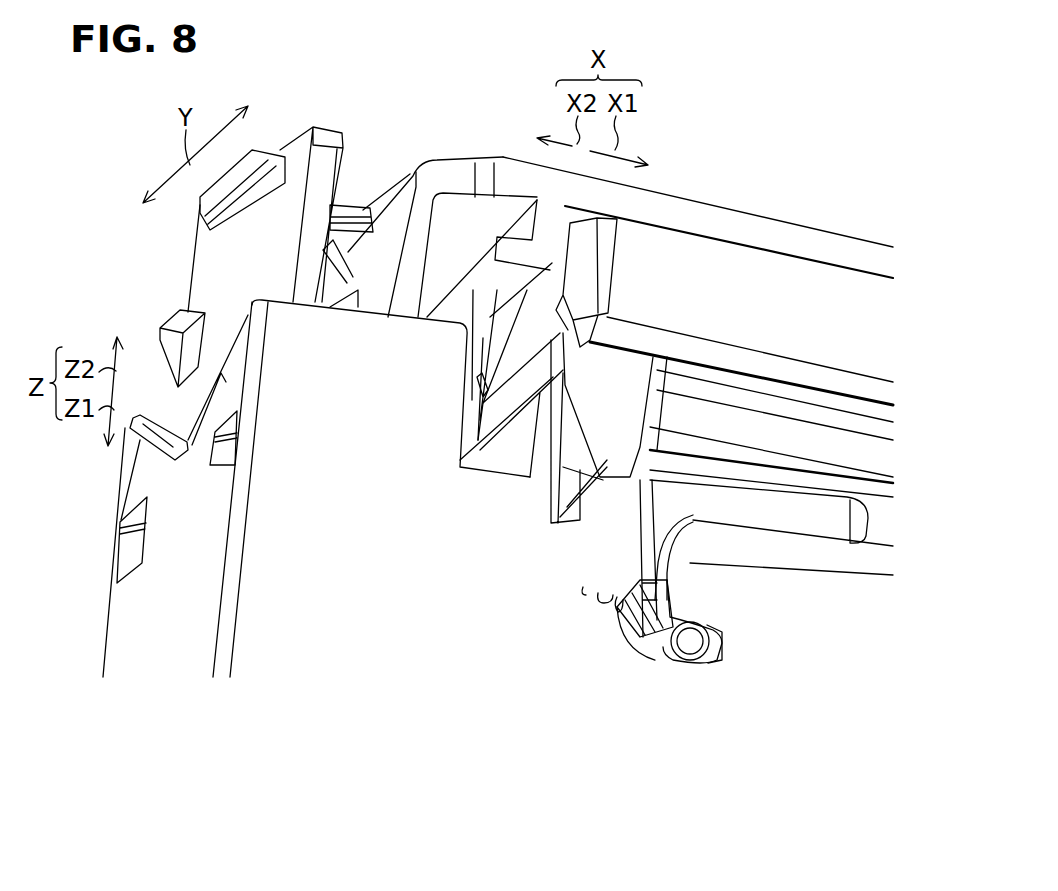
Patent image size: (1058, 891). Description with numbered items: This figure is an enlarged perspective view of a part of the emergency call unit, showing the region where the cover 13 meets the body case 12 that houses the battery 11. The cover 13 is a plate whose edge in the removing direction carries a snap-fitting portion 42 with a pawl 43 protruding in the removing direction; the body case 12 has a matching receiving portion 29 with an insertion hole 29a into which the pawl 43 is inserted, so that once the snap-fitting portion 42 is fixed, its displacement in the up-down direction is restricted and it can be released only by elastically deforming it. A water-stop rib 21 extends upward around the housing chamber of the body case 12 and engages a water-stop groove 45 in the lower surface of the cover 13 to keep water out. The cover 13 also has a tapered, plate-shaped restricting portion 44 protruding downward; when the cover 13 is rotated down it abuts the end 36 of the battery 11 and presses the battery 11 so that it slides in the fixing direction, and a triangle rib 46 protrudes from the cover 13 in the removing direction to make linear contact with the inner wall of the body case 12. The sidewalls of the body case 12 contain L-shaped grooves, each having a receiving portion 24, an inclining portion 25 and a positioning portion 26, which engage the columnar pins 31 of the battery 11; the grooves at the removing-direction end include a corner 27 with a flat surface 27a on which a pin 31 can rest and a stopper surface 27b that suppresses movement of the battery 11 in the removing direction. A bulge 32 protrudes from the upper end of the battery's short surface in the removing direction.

The battery 11 is at (845, 575).
The body case 12 is at (507, 640).
The cover 13 is at (758, 204).
The water-stop rib 21 is at (550, 453).
The receiving portion 24 is at (690, 560).
The inclining portion 25 is at (640, 647).
The positioning portion 26 is at (690, 645).
The corner 27 is at (620, 687).
The flat surface 27a is at (611, 610).
The stopper surface 27b is at (590, 592).
The receiving portion 29 is at (128, 627).
The insertion hole 29a is at (120, 545).
The pin 31 is at (710, 668).
The bulge 32 is at (573, 530).
The end of the battery 36 is at (697, 517).
The snap-fitting portion 42 is at (336, 166).
The pawl 43 is at (268, 295).
The restricting portion 44 is at (547, 540).
The water-stop groove 45 is at (558, 207).
The triangle rib 46 is at (490, 345).